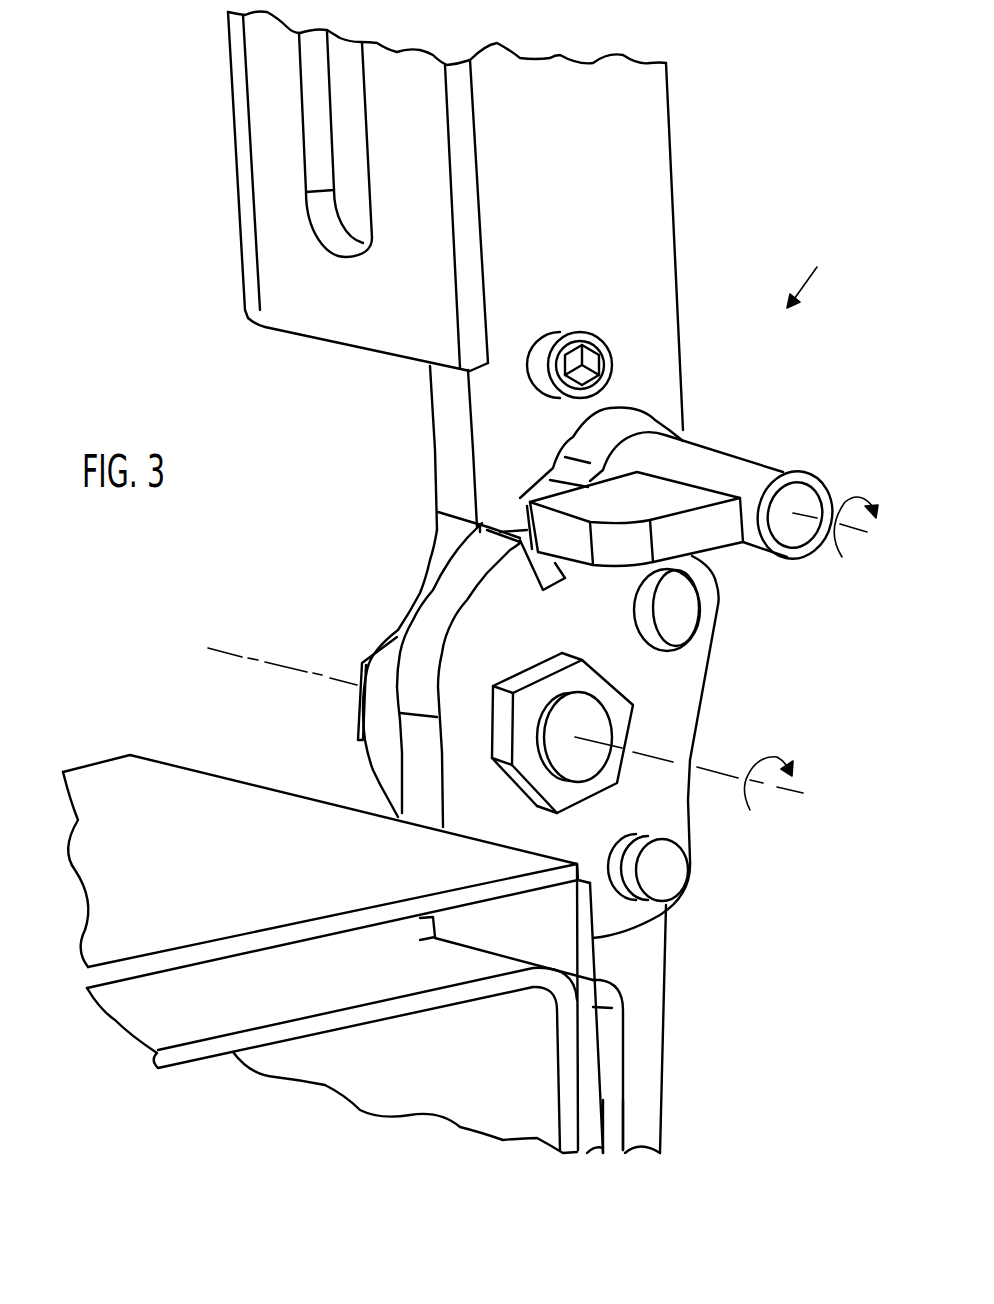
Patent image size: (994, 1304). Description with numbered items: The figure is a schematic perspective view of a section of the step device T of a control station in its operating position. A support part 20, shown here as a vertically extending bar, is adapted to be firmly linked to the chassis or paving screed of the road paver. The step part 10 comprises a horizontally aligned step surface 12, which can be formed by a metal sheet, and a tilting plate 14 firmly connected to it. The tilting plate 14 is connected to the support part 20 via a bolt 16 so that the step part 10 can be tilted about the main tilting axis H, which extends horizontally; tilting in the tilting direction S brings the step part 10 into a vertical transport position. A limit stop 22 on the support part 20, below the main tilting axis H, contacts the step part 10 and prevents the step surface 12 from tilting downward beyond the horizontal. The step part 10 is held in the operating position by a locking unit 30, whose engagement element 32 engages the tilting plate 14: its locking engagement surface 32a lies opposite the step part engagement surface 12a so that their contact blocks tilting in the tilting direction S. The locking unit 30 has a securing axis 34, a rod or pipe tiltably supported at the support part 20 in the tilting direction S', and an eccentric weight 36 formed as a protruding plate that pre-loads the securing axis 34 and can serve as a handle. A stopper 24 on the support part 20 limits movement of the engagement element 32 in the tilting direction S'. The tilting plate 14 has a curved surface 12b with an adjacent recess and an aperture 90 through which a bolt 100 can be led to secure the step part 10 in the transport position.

The step part 10 is at (521, 838).
The step surface 12 is at (167, 775).
The step part engagement surface 12a is at (473, 617).
The curved surface 12b is at (417, 633).
The tilting plate 14 is at (545, 838).
The bolt 16 is at (590, 710).
The support part 20 is at (658, 215).
The limit stop 22 is at (613, 1052).
The stopper 24 is at (550, 335).
The locking unit 30 is at (600, 484).
The engagement element 32 is at (462, 478).
The locking engagement surface 32a is at (480, 527).
The securing axis 34 is at (768, 478).
The eccentric weight 36 is at (708, 538).
The aperture 90 is at (647, 610).
The bolt 100 is at (673, 885).
The step device T is at (808, 273).
The tilting direction S is at (768, 757).
The tilting direction of securing axis S' is at (835, 500).
The main tilting axis H is at (722, 778).